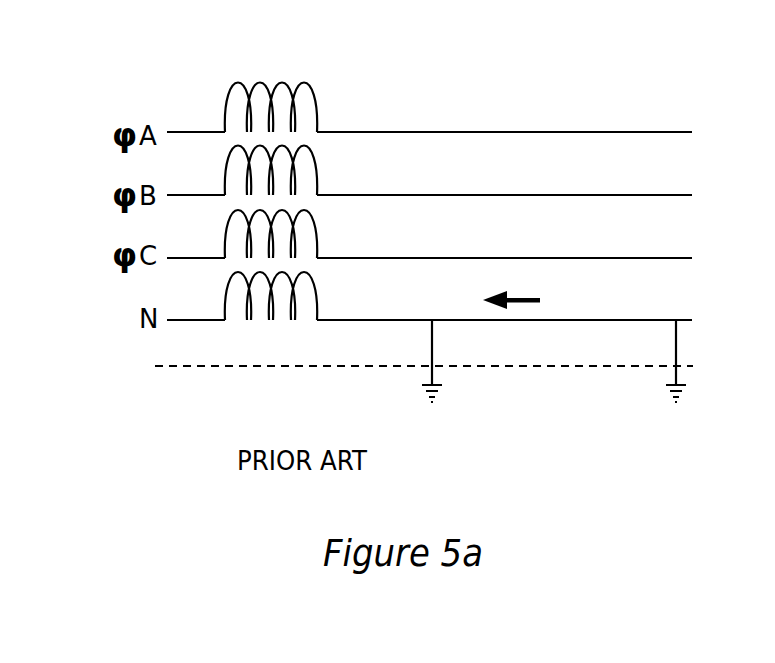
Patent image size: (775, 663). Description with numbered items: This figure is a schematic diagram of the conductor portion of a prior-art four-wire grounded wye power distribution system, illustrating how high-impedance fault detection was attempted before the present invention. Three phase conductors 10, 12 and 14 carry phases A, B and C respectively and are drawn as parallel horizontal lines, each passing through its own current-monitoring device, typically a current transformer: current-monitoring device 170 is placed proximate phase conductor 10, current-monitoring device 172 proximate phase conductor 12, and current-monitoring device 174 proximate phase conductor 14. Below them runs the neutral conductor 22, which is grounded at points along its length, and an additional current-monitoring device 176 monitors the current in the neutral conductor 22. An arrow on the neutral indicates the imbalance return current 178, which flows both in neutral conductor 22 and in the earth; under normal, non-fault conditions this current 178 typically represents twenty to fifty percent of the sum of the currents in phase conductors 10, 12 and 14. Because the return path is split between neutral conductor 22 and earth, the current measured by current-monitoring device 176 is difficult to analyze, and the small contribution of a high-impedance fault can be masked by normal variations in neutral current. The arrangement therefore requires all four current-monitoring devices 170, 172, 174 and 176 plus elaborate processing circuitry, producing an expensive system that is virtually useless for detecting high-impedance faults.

The current-monitoring device 170 is at (317, 118).
The current-monitoring device 172 is at (319, 183).
The current-monitoring device 174 is at (319, 252).
The current-monitoring device 176 is at (319, 313).
The phase conductor 10 is at (545, 132).
The phase conductor 12 is at (511, 195).
The phase conductor 14 is at (510, 258).
The neutral conductor 22 is at (573, 320).
The imbalance return current 178 is at (533, 303).